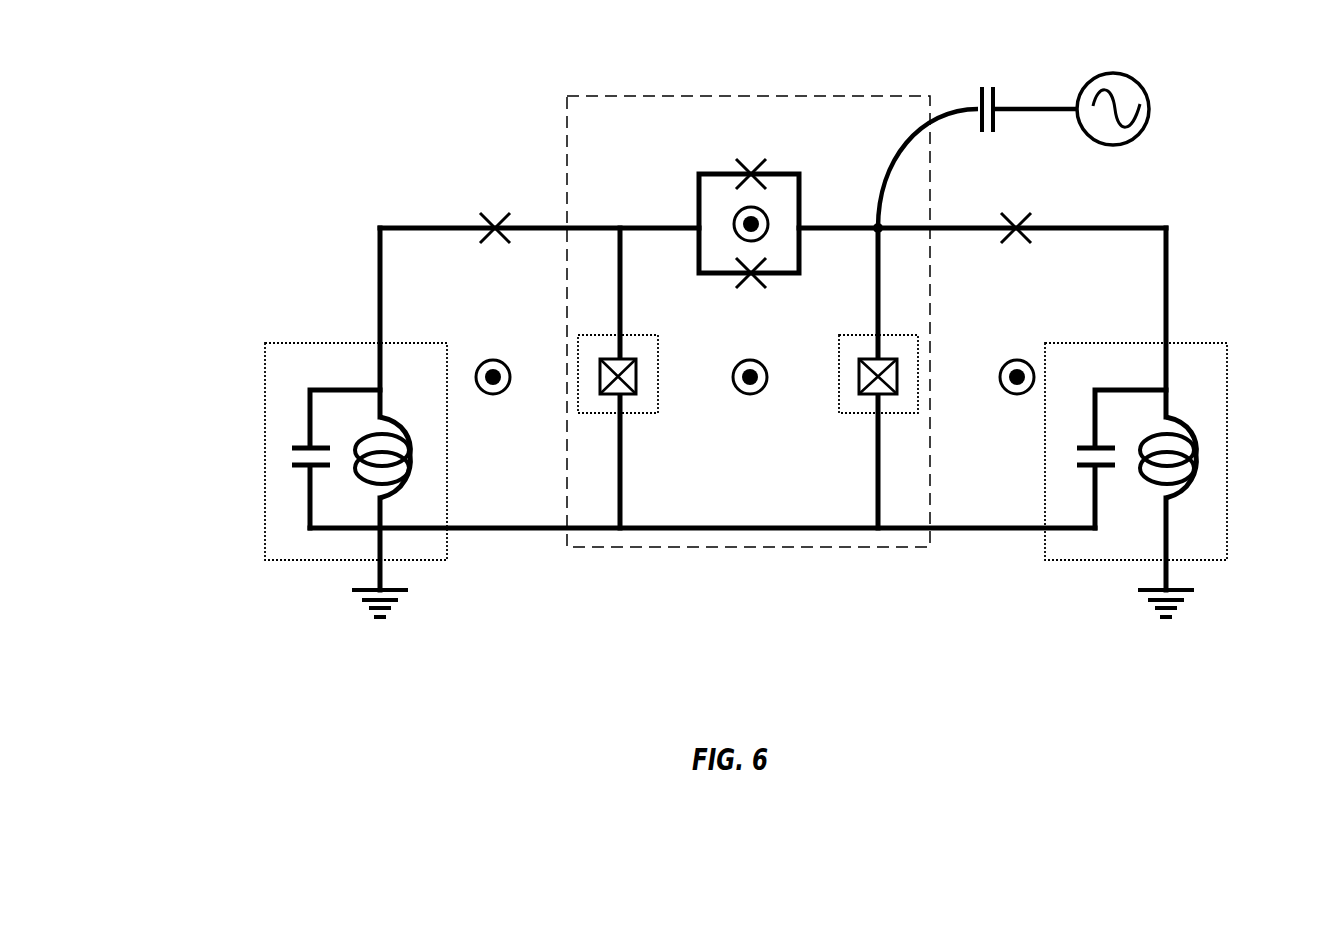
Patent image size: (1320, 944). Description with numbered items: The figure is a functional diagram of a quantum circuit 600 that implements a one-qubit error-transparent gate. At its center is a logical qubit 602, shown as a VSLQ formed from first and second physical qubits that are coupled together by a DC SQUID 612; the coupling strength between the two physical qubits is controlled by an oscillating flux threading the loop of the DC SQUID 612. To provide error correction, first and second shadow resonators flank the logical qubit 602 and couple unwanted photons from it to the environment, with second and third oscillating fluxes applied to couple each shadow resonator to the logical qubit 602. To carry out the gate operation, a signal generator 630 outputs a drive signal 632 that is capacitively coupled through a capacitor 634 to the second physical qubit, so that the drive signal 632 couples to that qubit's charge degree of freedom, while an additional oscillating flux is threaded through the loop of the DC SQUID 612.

The quantum circuit 600 is at (224, 72).
The logical qubit 602 is at (776, 128).
The DC SQUID 612 is at (799, 176).
The signal generator 630 is at (1110, 73).
The drive signal 632 is at (1037, 106).
The capacitor 634 is at (986, 86).